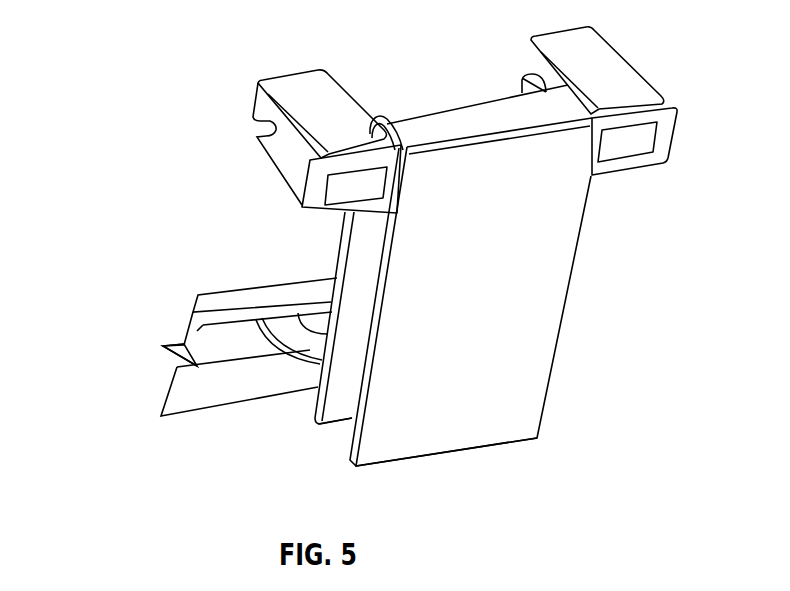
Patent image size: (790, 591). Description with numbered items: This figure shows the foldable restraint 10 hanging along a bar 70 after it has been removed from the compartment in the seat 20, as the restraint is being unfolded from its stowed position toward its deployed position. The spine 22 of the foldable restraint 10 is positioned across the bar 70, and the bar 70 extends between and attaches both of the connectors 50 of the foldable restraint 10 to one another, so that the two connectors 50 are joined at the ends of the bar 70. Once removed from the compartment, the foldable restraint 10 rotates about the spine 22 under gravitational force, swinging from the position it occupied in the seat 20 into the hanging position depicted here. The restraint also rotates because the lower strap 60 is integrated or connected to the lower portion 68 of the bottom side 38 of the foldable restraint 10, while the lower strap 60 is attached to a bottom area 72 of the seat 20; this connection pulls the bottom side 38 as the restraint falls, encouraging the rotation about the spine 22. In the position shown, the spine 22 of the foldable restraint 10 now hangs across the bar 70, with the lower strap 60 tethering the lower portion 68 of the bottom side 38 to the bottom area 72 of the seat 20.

The foldable restraint 10 is at (553, 466).
The seat 20 is at (250, 258).
The spine 22 is at (467, 102).
The bottom side 38 is at (361, 257).
The connectors 50 is at (289, 154).
The lower strap 60 is at (304, 352).
The lower portion 68 is at (326, 425).
The bar 70 is at (388, 120).
The bottom area 72 is at (214, 325).